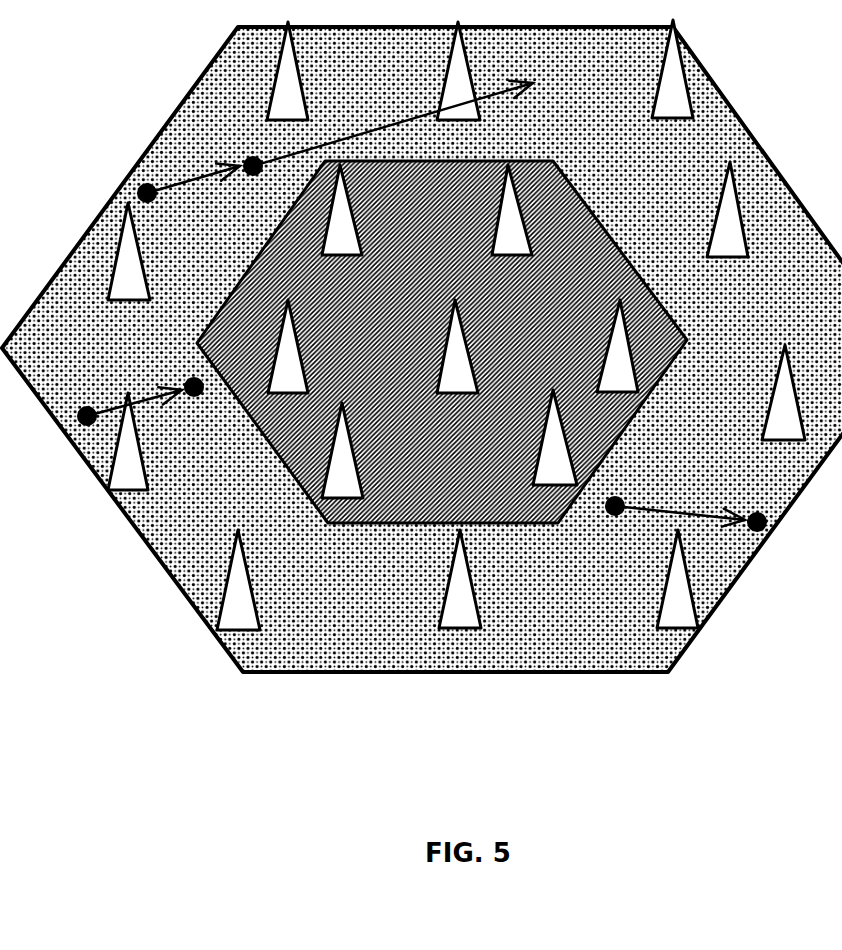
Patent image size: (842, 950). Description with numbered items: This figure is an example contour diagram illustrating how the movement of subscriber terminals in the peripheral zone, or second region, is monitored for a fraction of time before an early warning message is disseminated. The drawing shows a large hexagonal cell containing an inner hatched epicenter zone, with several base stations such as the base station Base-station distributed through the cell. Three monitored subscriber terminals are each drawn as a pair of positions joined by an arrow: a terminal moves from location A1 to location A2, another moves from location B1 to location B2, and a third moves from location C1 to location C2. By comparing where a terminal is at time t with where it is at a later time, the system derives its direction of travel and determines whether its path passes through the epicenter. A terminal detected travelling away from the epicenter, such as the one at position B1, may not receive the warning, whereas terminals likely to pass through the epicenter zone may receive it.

The location A1 of subscriber terminal A1 is at (73, 385).
The location A2 of subscriber terminal A2 is at (174, 355).
The location B1 of subscriber terminal B1 is at (627, 477).
The location B2 of subscriber terminal B2 is at (764, 495).
The location C1 of subscriber terminal C1 is at (134, 164).
The location C2 of subscriber terminal C2 is at (235, 136).
The base station Base-station is at (213, 640).